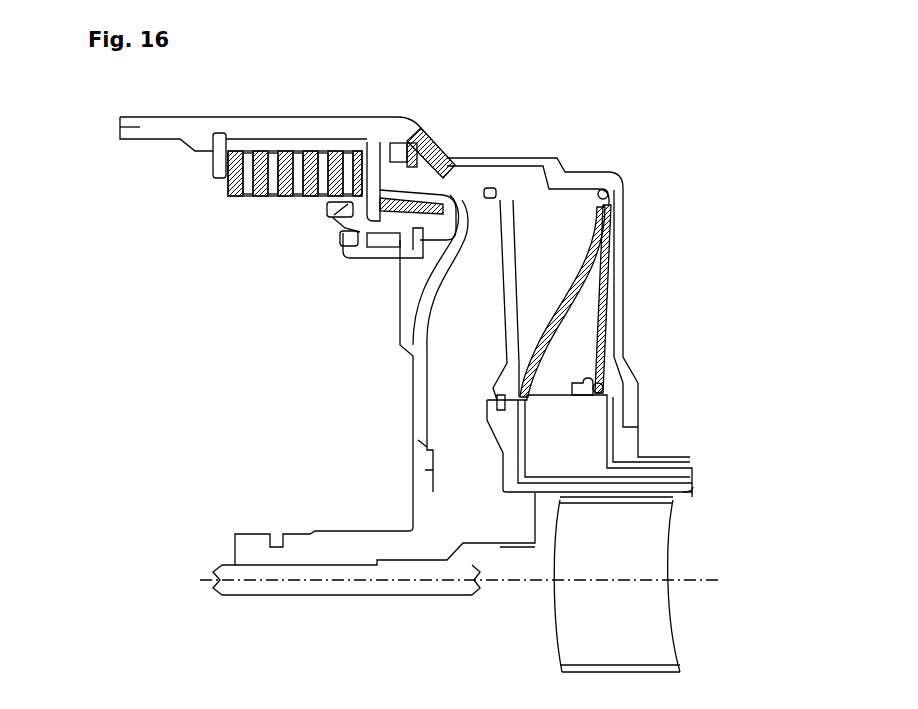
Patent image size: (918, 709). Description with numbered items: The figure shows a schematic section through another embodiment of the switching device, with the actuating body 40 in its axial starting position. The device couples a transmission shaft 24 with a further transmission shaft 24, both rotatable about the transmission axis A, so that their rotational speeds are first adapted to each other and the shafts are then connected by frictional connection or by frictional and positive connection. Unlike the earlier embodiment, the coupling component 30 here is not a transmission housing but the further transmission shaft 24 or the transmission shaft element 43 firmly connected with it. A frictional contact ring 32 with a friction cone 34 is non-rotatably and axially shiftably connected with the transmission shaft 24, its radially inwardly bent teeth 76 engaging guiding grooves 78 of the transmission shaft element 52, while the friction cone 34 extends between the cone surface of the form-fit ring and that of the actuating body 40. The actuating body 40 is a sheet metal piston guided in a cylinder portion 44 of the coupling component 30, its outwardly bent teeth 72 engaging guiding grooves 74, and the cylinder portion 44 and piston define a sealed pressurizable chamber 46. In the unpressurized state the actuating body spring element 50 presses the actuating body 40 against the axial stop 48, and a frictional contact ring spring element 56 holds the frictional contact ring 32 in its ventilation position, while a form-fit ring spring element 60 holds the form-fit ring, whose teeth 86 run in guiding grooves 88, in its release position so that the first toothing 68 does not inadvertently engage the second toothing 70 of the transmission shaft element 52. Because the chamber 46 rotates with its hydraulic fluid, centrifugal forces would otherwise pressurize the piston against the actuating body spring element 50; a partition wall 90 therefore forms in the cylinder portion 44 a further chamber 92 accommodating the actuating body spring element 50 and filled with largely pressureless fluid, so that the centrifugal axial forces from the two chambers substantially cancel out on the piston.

The transmission shaft 24 is at (660, 627).
The coupling component 30 is at (633, 275).
The frictional contact ring 32 is at (463, 192).
The friction cone 34 is at (447, 162).
The actuating body 40 is at (600, 336).
The transmission shaft element 43 is at (140, 127).
The cylinder portion 44 is at (563, 232).
The chamber 46 is at (617, 387).
The axial stop 48 is at (612, 210).
The actuating body spring element 50 is at (568, 298).
The transmission shaft element 52 is at (425, 472).
The frictional contact ring spring element 56 is at (445, 263).
The form-fit ring spring element 60 is at (254, 188).
The first toothing 68 is at (355, 220).
The second toothing 70 is at (348, 210).
The teeth 72 is at (410, 147).
The guiding grooves 74 is at (395, 150).
The teeth 76 is at (388, 258).
The guiding grooves 78 is at (378, 262).
The teeth 86 is at (372, 143).
The guiding grooves 88 is at (292, 148).
The partition wall 90 is at (500, 350).
The further chamber 92 is at (529, 215).